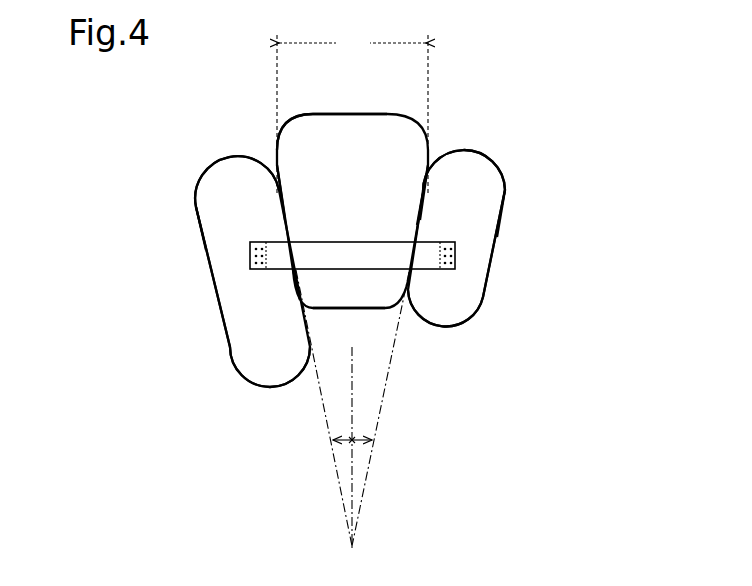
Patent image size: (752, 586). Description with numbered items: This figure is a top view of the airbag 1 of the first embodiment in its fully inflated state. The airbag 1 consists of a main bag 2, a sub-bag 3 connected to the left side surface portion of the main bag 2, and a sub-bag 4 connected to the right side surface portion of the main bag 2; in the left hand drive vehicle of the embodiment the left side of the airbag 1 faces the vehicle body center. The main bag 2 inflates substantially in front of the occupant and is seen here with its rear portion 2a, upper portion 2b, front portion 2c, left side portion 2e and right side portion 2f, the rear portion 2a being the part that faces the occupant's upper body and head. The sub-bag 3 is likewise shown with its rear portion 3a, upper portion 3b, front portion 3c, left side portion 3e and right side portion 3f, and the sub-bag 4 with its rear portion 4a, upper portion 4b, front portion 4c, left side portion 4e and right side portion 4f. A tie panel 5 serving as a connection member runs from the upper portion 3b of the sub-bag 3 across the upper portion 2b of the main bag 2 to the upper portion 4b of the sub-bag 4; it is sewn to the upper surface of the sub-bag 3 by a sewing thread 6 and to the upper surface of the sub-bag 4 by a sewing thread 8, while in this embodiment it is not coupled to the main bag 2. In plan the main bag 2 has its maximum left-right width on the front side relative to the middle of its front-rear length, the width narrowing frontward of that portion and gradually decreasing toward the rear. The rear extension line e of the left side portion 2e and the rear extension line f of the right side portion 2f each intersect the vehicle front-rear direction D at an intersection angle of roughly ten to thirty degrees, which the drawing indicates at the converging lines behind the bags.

The airbag 1 is at (543, 178).
The main bag 2 is at (362, 110).
The rear portion 2a is at (360, 312).
The upper portion 2b is at (345, 180).
The front portion 2c is at (333, 112).
The left side portion 2e is at (282, 212).
The right side portion 2f is at (422, 203).
The sub-bag 3 is at (220, 346).
The rear portion 3a is at (270, 382).
The upper portion 3b is at (232, 292).
The front portion 3c is at (228, 158).
The left side portion 3e is at (205, 251).
The right side portion 3f is at (297, 286).
The sub-bag 4 is at (488, 300).
The rear portion 4a is at (447, 327).
The upper portion 4b is at (490, 275).
The front portion 4c is at (470, 155).
The left side portion 4e is at (424, 222).
The right side portion 4f is at (497, 237).
The tie panel 5 is at (387, 252).
The sewing thread 6 is at (251, 253).
The sewing thread 8 is at (457, 257).
The vehicle front-rear direction D is at (350, 402).
The rear extension line e is at (333, 473).
The rear extension line f is at (372, 472).